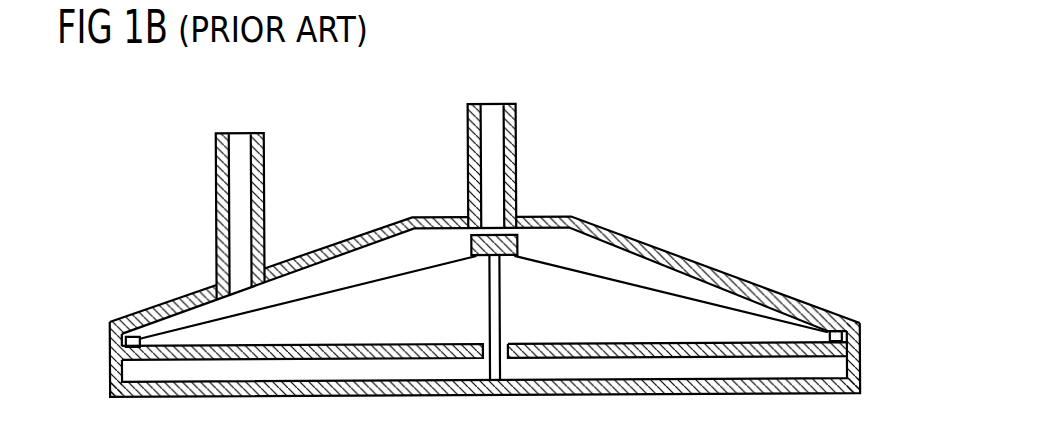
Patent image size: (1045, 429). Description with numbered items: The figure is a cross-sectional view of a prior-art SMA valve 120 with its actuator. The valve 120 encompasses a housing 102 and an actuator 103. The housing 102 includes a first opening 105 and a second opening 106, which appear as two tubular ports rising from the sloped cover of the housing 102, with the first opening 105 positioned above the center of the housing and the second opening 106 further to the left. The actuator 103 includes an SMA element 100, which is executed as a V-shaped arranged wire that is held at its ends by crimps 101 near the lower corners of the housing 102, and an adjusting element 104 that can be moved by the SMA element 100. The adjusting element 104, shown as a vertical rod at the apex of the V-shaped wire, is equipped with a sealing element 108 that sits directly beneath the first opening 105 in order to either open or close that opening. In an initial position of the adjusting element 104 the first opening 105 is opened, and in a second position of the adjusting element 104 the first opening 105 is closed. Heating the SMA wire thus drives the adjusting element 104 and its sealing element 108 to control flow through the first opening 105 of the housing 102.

The SMA element 100 is at (253, 315).
The crimps 101 is at (838, 329).
The housing 102 is at (718, 271).
The actuator 103 is at (466, 300).
The adjusting element 104 is at (500, 309).
The first opening 105 is at (493, 112).
The second opening 106 is at (240, 138).
The sealing element 108 is at (519, 242).
The valve 120 is at (670, 153).